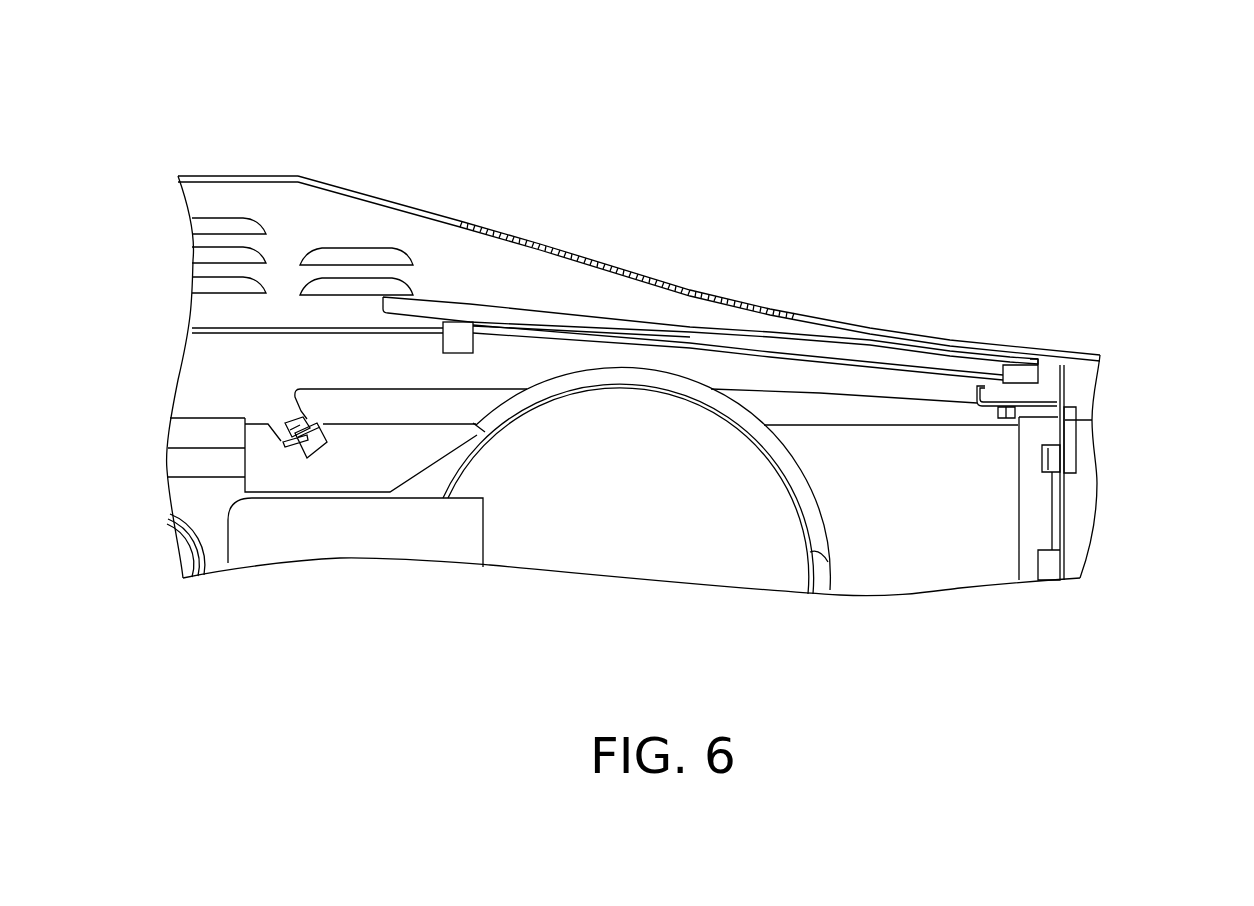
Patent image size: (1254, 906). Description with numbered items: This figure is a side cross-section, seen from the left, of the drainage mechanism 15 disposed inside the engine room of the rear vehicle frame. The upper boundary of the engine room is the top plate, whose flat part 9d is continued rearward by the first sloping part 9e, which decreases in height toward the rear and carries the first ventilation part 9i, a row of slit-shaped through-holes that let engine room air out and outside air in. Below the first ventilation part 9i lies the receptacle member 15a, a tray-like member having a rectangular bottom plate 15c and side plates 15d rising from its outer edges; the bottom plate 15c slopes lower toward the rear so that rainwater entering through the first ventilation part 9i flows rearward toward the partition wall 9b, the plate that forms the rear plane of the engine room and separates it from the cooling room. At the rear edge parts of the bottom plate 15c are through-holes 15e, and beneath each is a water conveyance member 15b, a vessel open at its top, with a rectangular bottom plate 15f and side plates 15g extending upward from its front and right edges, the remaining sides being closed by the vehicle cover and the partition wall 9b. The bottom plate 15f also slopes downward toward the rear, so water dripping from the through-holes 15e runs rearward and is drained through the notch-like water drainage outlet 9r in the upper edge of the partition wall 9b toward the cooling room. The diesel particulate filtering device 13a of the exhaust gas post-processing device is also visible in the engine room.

The flat part 9d is at (243, 175).
The first sloping part 9e is at (380, 197).
The first ventilation part 9i is at (566, 252).
The water drainage outlet 9r is at (1067, 398).
The partition wall 9b is at (1066, 507).
The diesel particulate filtering device 13a is at (810, 553).
The drainage mechanism 15 is at (1048, 196).
The receptacle member 15a is at (932, 359).
The water conveyance member 15b is at (1041, 403).
The bottom plate 15c is at (877, 363).
The side plate 15d is at (1036, 357).
The through-hole 15e is at (1005, 365).
The bottom plate 15f is at (1005, 418).
The side plate 15g is at (975, 387).